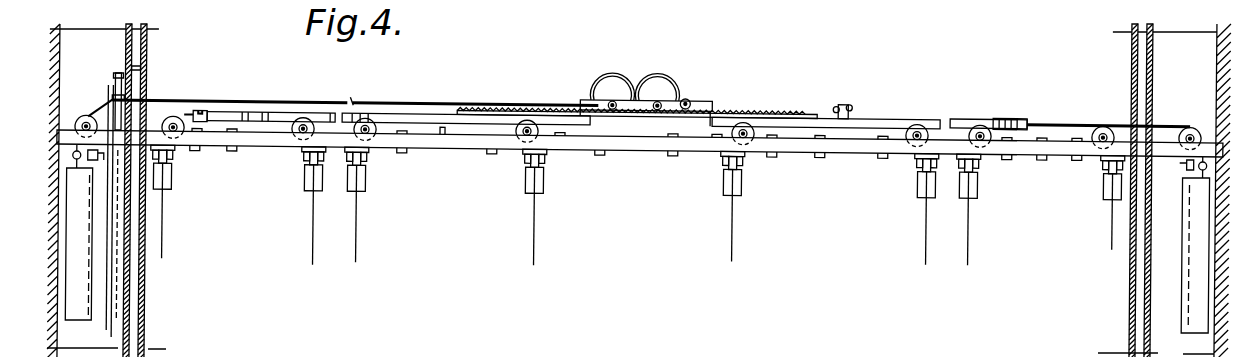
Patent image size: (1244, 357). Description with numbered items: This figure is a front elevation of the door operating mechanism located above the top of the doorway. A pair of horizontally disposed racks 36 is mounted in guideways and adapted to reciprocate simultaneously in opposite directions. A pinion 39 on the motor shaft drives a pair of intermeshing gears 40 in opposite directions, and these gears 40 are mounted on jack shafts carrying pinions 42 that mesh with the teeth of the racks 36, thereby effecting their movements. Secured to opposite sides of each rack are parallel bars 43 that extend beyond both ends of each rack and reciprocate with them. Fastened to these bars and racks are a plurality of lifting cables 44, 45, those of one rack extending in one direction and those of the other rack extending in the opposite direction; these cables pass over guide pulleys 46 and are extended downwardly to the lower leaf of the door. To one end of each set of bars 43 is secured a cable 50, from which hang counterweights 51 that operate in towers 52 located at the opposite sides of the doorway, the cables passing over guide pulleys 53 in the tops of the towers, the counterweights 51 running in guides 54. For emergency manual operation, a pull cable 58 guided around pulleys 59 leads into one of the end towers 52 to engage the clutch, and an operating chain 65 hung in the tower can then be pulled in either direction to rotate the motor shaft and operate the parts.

The racks 36 is at (480, 107).
The pinion 39 is at (701, 101).
The intermeshing gears 40 is at (636, 91).
The pinions 42 is at (597, 96).
The parallel bars 43 is at (249, 109).
The lifting cables 44 is at (311, 237).
The lifting cables 45 is at (165, 208).
The guide pulleys 46 is at (181, 117).
The cable 50 is at (171, 113).
The counterweights 51 is at (80, 250).
The towers 52 is at (147, 337).
The guide pulleys 53 is at (90, 112).
The guides 54 is at (97, 270).
The pull cable 58 is at (352, 101).
The pulleys 59 is at (109, 85).
The operating chain 65 is at (115, 305).